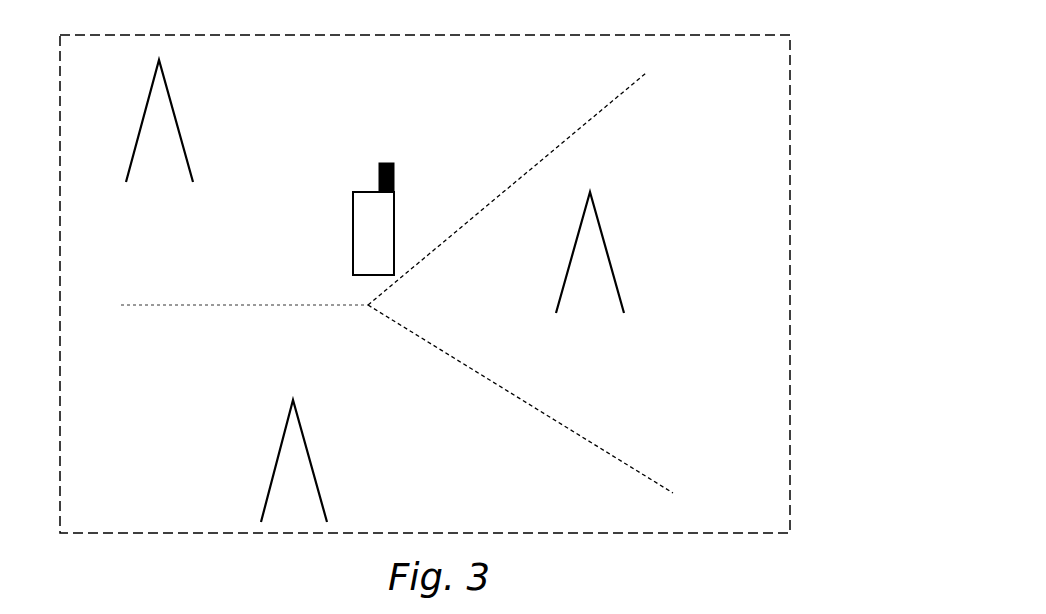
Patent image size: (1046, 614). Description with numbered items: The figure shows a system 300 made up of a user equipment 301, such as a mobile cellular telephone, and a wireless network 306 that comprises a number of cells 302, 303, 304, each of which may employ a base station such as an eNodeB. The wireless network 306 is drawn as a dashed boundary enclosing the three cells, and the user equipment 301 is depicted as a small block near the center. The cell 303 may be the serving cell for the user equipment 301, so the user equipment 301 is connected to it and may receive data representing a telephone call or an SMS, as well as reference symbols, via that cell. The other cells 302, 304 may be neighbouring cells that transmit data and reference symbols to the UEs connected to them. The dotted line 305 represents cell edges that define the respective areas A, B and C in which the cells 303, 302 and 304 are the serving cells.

The system 300 is at (455, 303).
The user equipment 301 is at (390, 163).
The cell 302 is at (327, 522).
The cell 303 is at (193, 182).
The cell 304 is at (624, 313).
The dotted line 305 is at (602, 110).
The wireless network 306 is at (790, 507).